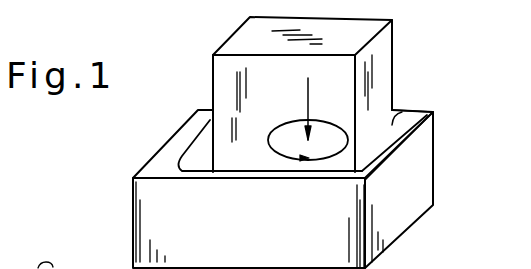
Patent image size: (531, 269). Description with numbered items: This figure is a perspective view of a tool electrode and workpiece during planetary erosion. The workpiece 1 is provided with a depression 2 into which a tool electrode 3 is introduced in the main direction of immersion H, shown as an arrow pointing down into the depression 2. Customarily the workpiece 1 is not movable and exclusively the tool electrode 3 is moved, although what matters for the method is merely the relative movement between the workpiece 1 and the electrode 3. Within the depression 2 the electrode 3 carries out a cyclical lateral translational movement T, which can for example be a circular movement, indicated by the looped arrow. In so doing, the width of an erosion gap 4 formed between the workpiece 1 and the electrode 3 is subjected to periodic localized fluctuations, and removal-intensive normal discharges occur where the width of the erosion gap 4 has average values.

The workpiece 1 is at (403, 175).
The depression 2 is at (183, 157).
The tool electrode 3 is at (373, 70).
The erosion gap 4 is at (432, 111).
The cyclical lateral translational movement T is at (347, 142).
The main direction of immersion H is at (308, 92).